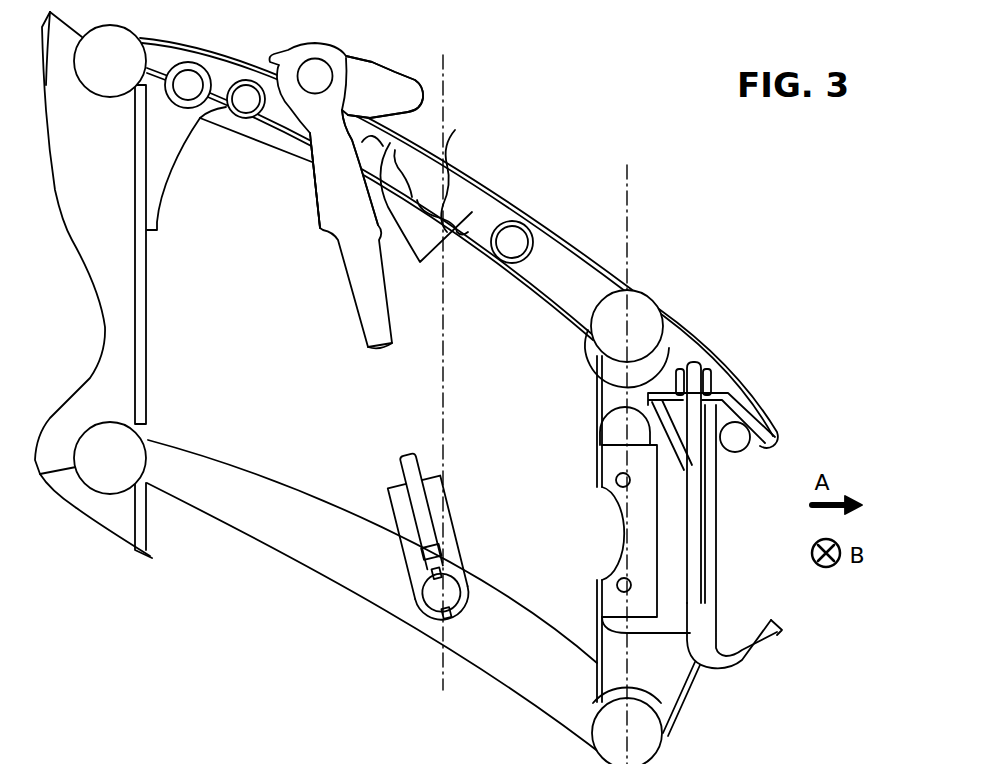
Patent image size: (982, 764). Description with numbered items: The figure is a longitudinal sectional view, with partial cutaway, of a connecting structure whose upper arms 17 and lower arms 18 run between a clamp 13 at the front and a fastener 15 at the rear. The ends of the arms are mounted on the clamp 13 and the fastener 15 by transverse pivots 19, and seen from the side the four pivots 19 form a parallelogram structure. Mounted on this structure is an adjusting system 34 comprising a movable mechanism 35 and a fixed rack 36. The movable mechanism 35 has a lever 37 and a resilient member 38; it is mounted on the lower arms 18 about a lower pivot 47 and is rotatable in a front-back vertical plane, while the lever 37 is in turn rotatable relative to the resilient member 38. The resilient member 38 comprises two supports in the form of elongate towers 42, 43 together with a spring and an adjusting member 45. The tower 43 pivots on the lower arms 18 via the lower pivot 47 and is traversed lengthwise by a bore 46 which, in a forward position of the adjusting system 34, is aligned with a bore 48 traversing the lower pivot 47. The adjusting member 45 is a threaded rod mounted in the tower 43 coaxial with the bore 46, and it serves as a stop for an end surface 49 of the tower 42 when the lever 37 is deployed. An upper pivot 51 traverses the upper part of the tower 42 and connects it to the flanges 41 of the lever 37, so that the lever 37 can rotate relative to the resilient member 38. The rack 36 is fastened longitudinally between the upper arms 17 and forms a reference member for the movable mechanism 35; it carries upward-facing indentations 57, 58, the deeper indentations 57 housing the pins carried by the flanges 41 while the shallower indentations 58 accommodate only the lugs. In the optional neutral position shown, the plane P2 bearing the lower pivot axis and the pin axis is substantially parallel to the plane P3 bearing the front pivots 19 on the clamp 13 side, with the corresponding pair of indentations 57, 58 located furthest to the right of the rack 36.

The clamp 13 is at (762, 630).
The fastener 15 is at (88, 201).
The upper arms 17 is at (555, 296).
The lower arms 18 is at (218, 503).
The transverse pivot 19 is at (98, 72).
The adjusting system 34 is at (628, 70).
The movable mechanism 35 is at (520, 75).
The fixed rack 36 is at (500, 218).
The lever 37 is at (375, 64).
The resilient member 38 is at (320, 228).
The flange 41 is at (370, 103).
The support (tower) 42 is at (323, 196).
The support (tower) 43 is at (446, 530).
The adjusting member (threaded rod) 45 is at (408, 470).
The bore 46 is at (443, 566).
The lower pivot 47 is at (428, 584).
The bore 48 is at (456, 583).
The end surface 49 is at (376, 352).
The upper pivot 51 is at (316, 73).
The indentations 57 is at (460, 174).
The indentations 58 is at (420, 204).
The plane P2' P2 is at (447, 97).
The plane P3 is at (630, 232).